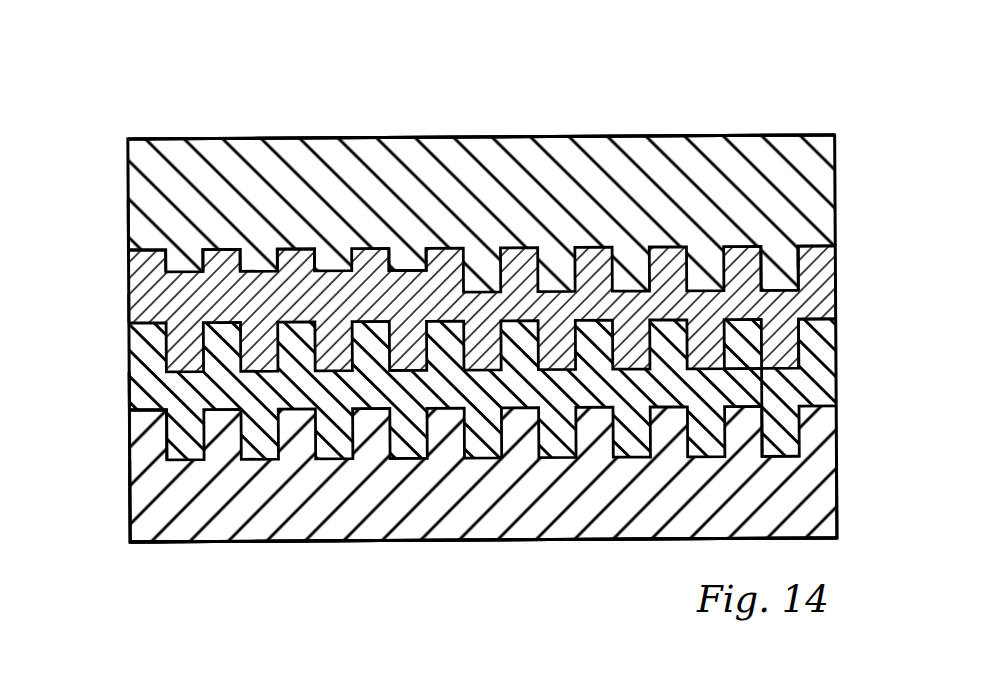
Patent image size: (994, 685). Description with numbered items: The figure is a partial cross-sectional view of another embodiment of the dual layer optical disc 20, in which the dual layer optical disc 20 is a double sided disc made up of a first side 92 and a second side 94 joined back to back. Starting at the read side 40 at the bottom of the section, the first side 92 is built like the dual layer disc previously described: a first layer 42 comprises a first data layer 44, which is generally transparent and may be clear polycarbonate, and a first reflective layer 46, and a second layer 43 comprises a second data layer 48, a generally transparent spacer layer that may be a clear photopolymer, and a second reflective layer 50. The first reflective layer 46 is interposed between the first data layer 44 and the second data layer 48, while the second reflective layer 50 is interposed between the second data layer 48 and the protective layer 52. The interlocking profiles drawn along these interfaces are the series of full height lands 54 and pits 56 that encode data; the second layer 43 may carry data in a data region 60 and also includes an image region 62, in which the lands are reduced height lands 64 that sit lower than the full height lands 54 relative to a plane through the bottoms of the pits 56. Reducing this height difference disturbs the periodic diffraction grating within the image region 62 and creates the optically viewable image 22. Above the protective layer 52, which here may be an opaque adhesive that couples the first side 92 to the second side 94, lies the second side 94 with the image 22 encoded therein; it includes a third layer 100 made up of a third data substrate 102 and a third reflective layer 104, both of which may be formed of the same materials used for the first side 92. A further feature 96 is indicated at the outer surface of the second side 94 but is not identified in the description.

The dual layer optical disc 20 is at (750, 72).
The image 22 is at (395, 241).
The read side 40 is at (427, 545).
The first layer 42 is at (118, 507).
The second layer 43 is at (118, 385).
The first data layer 44 is at (135, 511).
The first reflective layer 46 is at (163, 448).
The second data layer 48 is at (130, 403).
The second reflective layer 50 is at (130, 362).
The protective layer 52 is at (130, 300).
The full height lands 54 is at (806, 294).
The pits 56 is at (818, 254).
The data region 60 is at (266, 315).
The image region 62 is at (206, 243).
The reduced height lands 64 is at (295, 247).
The first side 92 is at (573, 540).
The second side 94 is at (582, 137).
The top surface 96 is at (380, 137).
The third layer 100 is at (127, 316).
The third data substrate 102 is at (128, 168).
The third reflective layer 104 is at (129, 263).